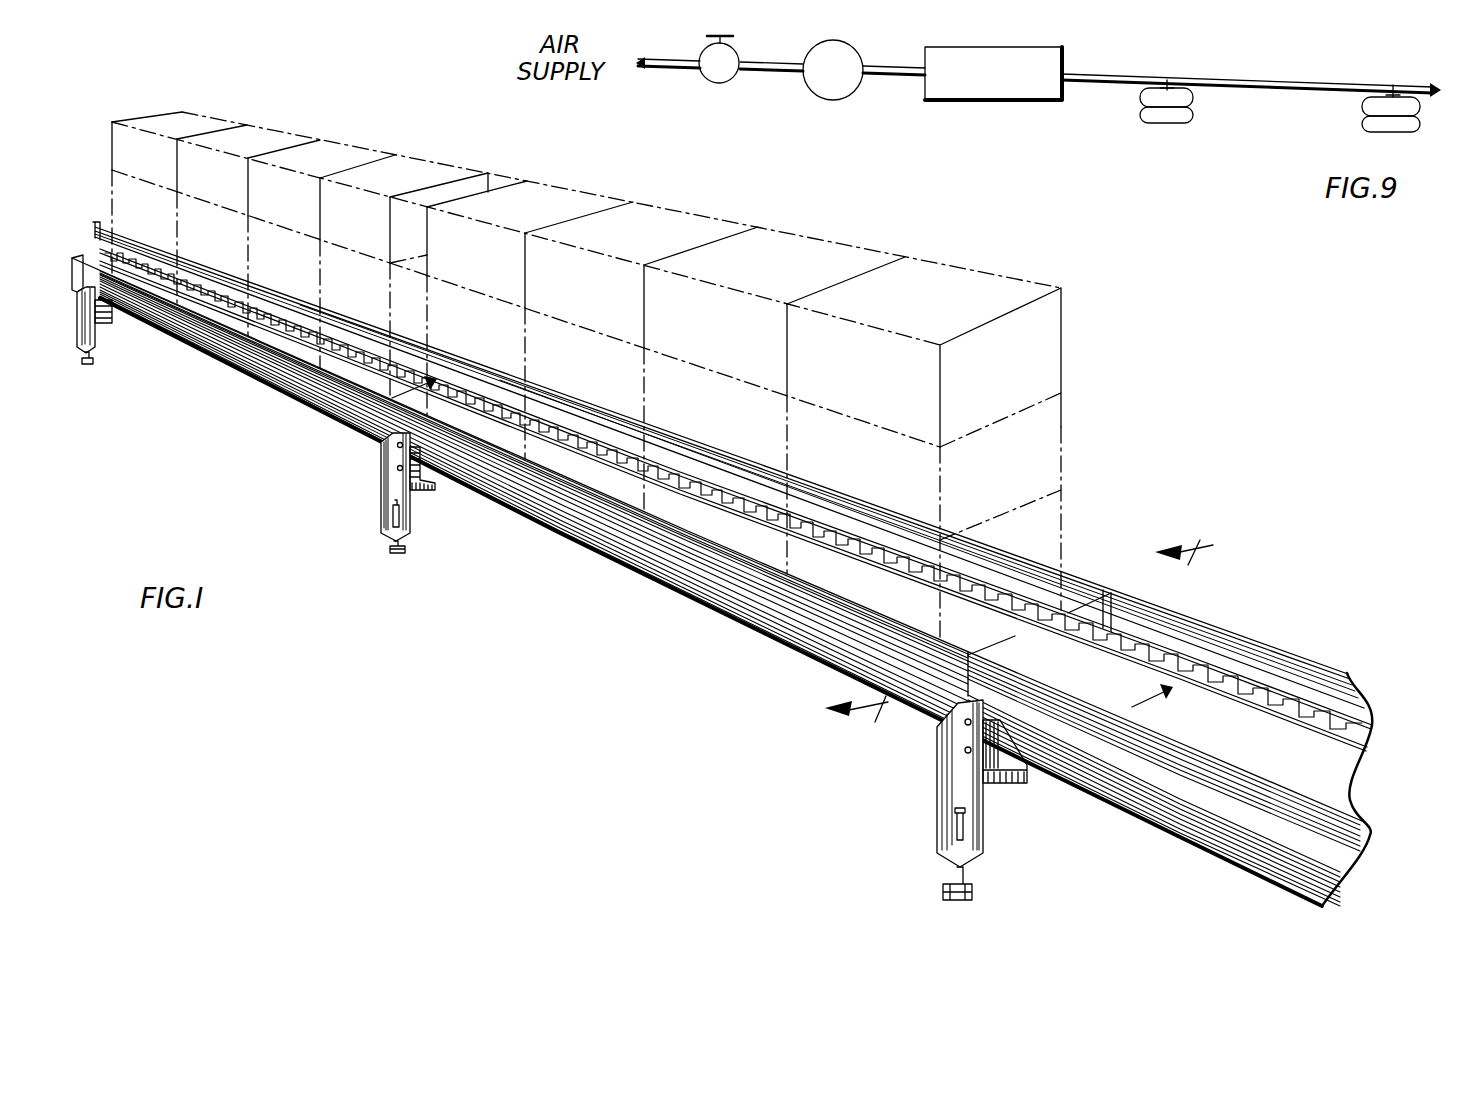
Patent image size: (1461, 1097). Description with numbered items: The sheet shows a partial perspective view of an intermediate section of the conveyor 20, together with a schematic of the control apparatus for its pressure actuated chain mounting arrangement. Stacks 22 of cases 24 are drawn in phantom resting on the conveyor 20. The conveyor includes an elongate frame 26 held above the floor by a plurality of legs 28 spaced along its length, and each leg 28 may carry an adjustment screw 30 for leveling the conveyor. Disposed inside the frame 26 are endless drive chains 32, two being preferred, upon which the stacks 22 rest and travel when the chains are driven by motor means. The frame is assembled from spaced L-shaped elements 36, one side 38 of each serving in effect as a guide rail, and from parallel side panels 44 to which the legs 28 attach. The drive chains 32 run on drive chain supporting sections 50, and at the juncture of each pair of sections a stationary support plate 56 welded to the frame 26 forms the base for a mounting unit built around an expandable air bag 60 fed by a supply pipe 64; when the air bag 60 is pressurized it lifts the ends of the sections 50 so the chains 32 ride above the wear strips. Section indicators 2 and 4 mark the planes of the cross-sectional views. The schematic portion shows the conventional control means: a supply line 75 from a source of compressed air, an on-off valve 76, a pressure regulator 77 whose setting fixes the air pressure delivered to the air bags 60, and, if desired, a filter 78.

In FIG. 1, the section line 2- 2 is at (1016, 637).
In FIG. 1, the section line 4- 4 is at (773, 548).
In FIG. 1, the conveyor 20 is at (1108, 558).
In FIG. 1, the stacks 22 is at (1042, 333).
In FIG. 1, the cases 24 is at (631, 376).
In FIG. 1, the frame 26 is at (711, 588).
In FIG. 1, the legs 28 is at (96, 348).
In FIG. 1, the adjustment screws 30 is at (395, 551).
In FIG. 1, the drive chains 32 is at (1252, 697).
In FIG. 1, the L-shaped elements 36 is at (529, 480).
In FIG. 1, the side 38 is at (1213, 640).
In FIG. 1, the side panels 44 is at (677, 577).
In FIG. 1, the drive chain supporting sections 50 is at (340, 363).
In FIG. 1, the support plate 56 is at (433, 488).
In FIG. 9, the air bag 60 is at (1167, 107).
In FIG. 9, the supply pipe 64 is at (1038, 76).
In FIG. 9, the supply line 75 is at (680, 70).
In FIG. 9, the on-off valve 76 is at (733, 80).
In FIG. 9, the pressure regulator 77 is at (850, 52).
In FIG. 9, the filter 78 is at (1015, 57).